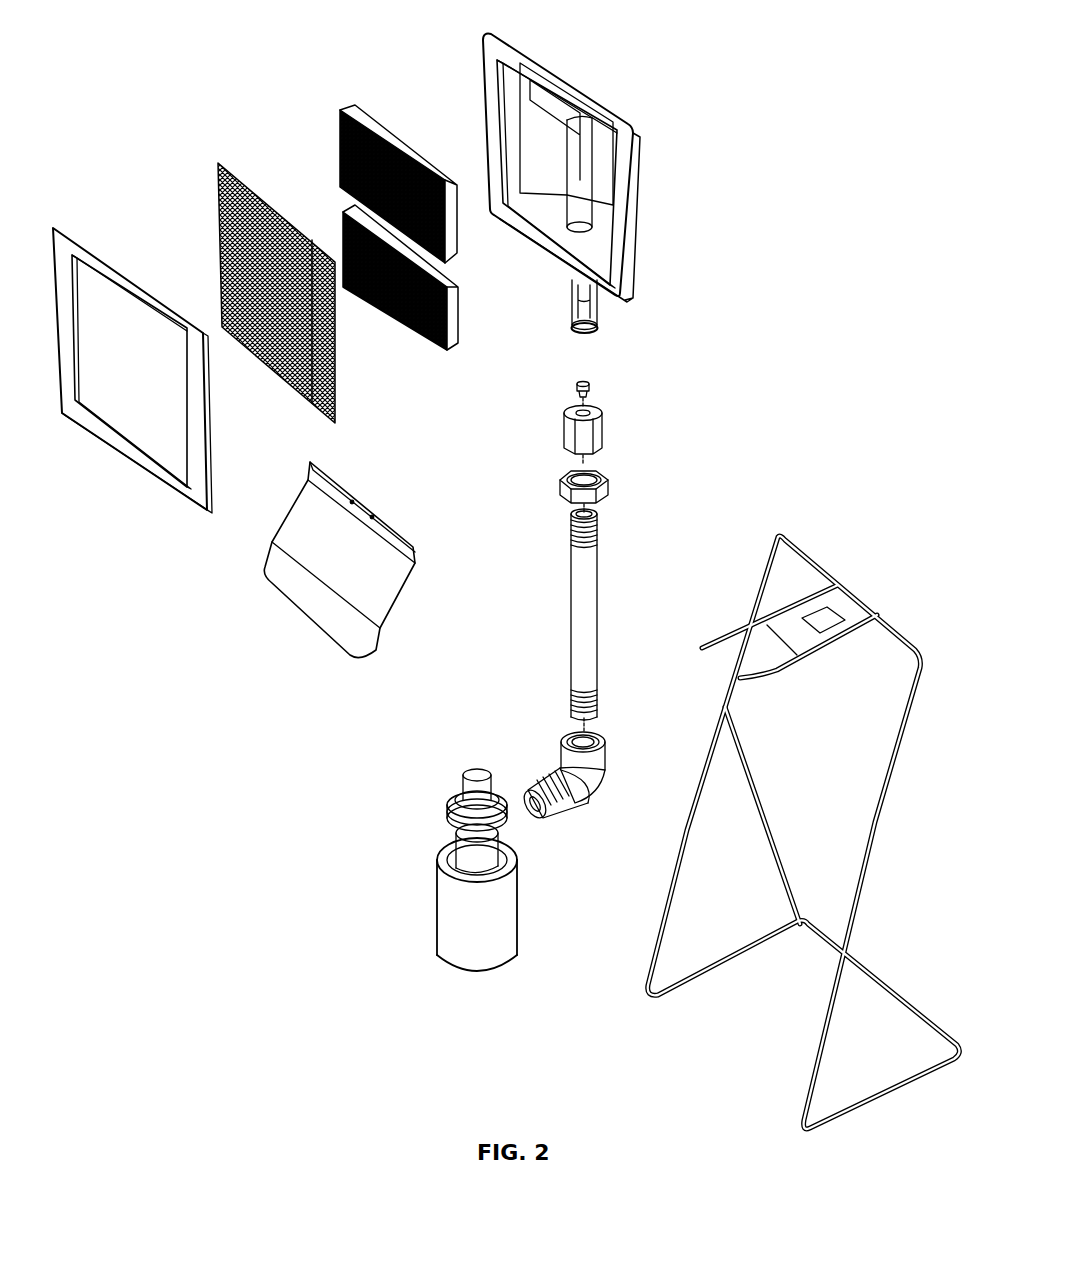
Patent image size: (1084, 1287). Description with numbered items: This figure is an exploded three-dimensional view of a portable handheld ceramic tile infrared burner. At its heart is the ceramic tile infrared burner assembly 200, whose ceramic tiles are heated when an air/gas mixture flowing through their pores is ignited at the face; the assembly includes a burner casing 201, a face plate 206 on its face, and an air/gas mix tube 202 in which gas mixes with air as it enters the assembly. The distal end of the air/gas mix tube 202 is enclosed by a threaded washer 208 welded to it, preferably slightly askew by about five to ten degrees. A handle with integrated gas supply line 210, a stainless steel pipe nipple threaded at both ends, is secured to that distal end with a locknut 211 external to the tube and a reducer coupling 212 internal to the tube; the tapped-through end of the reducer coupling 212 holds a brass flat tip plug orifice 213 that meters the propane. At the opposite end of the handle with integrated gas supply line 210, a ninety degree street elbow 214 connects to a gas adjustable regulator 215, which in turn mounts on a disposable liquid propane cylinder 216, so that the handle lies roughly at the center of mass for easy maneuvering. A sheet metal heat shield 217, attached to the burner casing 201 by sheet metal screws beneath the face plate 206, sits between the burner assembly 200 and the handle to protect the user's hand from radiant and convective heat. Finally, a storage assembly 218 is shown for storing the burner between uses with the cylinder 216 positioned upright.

The ceramic tile infrared burner assembly 200 is at (43, 193).
The burner casing 201 is at (622, 210).
The air/gas mix tube 202 is at (590, 220).
The face plate 206 is at (183, 508).
The threaded washer 208 is at (607, 337).
The handle with integrated gas supply line 210 is at (588, 597).
The locknut 211 is at (608, 490).
The reducer coupling 212 is at (592, 435).
The brass flat tip plug orifice 213 is at (588, 382).
The 90 degree street elbow 214 is at (602, 778).
The gas adjustable regulator 215 is at (458, 787).
The disposable liquid propane cylinder 216 is at (447, 925).
The heat shield 217 is at (327, 630).
The storage assembly 218 is at (876, 583).